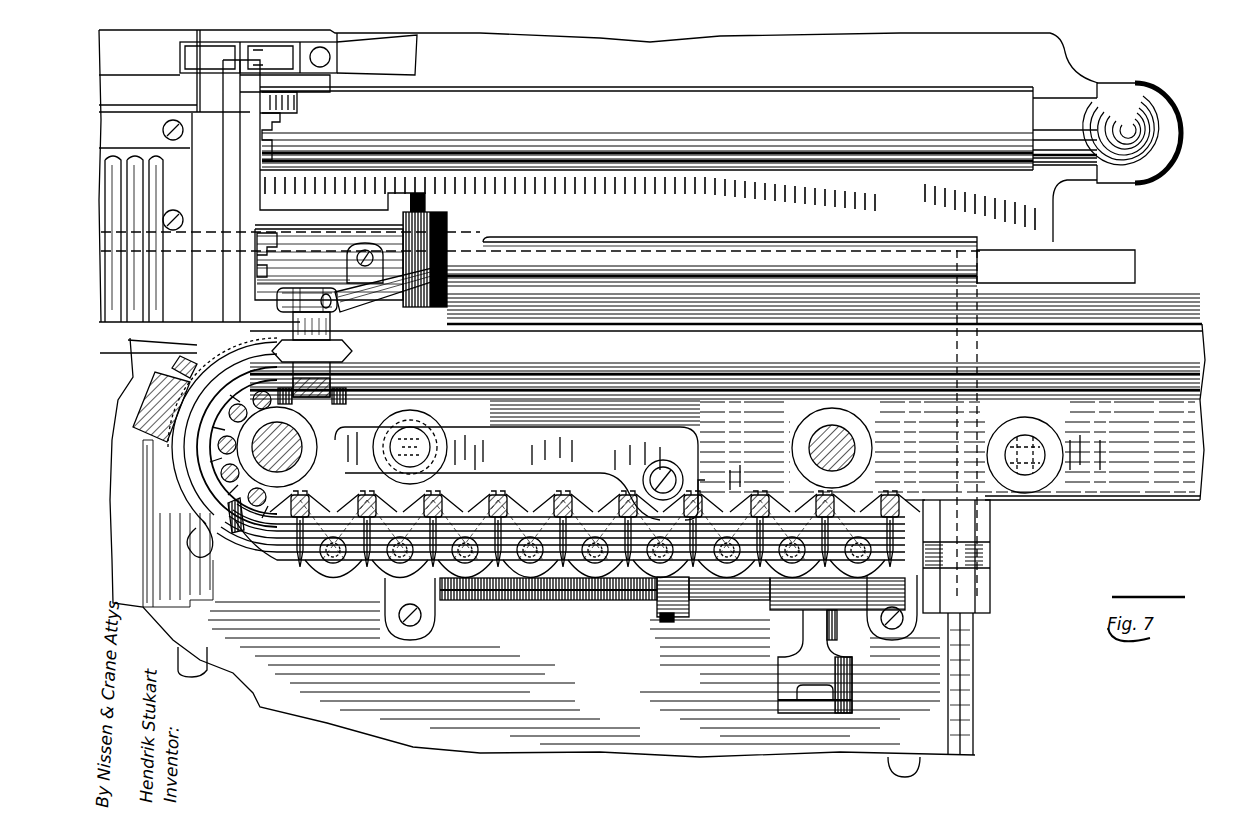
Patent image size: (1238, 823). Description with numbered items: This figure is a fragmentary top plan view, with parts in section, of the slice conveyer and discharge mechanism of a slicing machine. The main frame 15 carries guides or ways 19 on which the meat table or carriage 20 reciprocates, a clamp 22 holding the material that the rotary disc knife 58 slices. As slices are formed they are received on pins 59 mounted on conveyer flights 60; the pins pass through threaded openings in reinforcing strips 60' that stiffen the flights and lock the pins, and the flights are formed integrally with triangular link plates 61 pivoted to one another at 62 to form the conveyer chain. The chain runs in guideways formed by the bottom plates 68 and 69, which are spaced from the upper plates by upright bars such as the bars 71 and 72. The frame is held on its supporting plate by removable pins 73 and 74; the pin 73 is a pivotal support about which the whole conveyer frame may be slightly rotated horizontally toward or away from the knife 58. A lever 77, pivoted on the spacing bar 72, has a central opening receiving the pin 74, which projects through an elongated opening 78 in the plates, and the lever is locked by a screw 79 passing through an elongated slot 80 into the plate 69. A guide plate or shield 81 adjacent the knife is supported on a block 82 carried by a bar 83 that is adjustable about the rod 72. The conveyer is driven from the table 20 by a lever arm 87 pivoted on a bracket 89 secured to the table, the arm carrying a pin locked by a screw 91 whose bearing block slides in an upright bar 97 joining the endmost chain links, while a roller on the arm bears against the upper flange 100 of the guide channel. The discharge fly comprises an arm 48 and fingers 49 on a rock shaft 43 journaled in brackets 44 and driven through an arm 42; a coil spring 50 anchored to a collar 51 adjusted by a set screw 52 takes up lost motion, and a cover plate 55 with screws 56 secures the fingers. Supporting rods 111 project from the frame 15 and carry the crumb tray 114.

The base or main frame 15 is at (1052, 75).
The guides or ways 19 is at (650, 100).
The meat table or carriage 20 is at (199, 217).
The clamp 22 is at (258, 176).
The arm 42 is at (818, 660).
The rock shaft 43 is at (750, 600).
The brackets 44 is at (437, 625).
The upwardly extending arm 48 is at (987, 522).
The fingers 49 is at (860, 525).
The coil spring 50 is at (588, 602).
The collar 51 is at (668, 600).
The set screw 52 is at (668, 622).
The cover plate 55 is at (985, 548).
The screws 56 is at (985, 565).
The rotary disc knife 58 is at (108, 357).
The pins 59 is at (512, 598).
The conveyer flights 60 is at (577, 527).
The reinforcing strips 60' is at (573, 522).
The triangular plates or link plates 61 is at (762, 600).
The pivot 62 is at (712, 598).
The bottom plate 68 is at (1150, 338).
The bottom plate 69 is at (1170, 492).
The upright rod or bar 71 is at (858, 452).
The upright rod or spacing bar 72 is at (300, 445).
The removable pin 73 is at (1047, 455).
The removable pin 74 is at (425, 445).
The plate or lever 77 is at (523, 432).
The elongated opening 78 is at (418, 420).
The screw 79 is at (655, 482).
The elongated slot 80 is at (700, 483).
The guide plate or shield 81 is at (180, 487).
The block 82 is at (133, 427).
The bar 83 is at (140, 400).
The lever arm 87 is at (395, 295).
The bracket 89 is at (248, 198).
The screw 91 is at (333, 290).
The upright bar 97 is at (333, 385).
The upper flange 100 is at (742, 242).
The supporting rods 111 is at (890, 765).
The crumb tray 114 is at (730, 742).